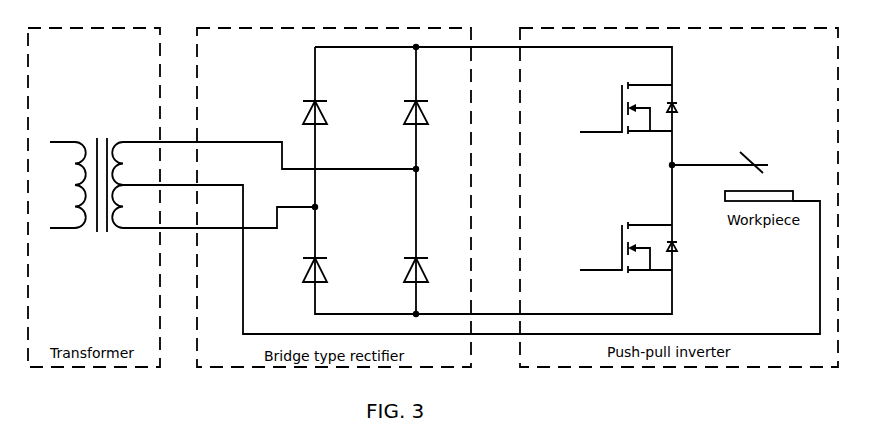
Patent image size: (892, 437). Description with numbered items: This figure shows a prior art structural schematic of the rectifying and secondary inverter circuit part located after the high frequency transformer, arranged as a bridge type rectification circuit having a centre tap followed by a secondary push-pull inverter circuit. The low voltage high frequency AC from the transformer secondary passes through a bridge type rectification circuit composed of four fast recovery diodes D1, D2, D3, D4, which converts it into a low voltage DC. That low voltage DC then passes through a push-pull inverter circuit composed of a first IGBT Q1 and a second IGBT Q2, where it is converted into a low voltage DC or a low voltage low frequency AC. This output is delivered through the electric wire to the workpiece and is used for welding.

The fast recovery diode D1 is at (332, 113).
The fast recovery diode D2 is at (433, 113).
The fast recovery diode D3 is at (330, 271).
The fast recovery diode D4 is at (431, 271).
The IGBT Q1 is at (623, 108).
The IGBT Q2 is at (623, 247).